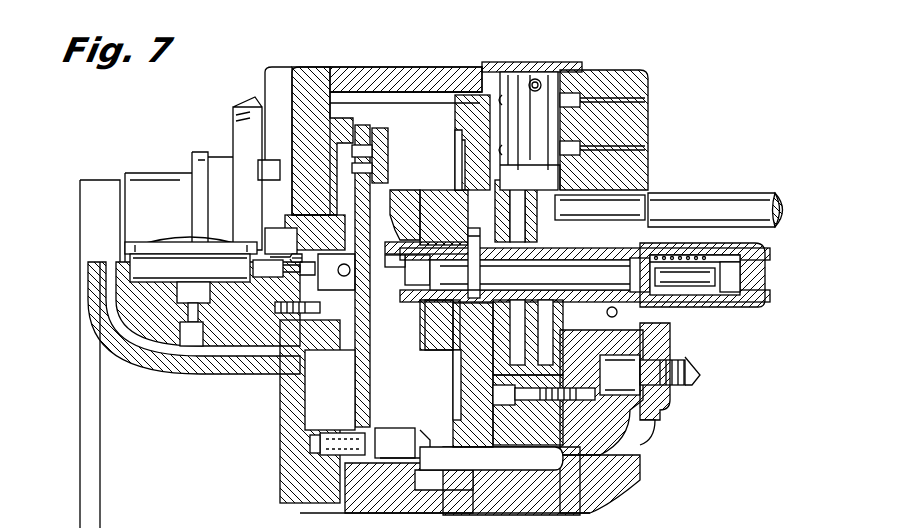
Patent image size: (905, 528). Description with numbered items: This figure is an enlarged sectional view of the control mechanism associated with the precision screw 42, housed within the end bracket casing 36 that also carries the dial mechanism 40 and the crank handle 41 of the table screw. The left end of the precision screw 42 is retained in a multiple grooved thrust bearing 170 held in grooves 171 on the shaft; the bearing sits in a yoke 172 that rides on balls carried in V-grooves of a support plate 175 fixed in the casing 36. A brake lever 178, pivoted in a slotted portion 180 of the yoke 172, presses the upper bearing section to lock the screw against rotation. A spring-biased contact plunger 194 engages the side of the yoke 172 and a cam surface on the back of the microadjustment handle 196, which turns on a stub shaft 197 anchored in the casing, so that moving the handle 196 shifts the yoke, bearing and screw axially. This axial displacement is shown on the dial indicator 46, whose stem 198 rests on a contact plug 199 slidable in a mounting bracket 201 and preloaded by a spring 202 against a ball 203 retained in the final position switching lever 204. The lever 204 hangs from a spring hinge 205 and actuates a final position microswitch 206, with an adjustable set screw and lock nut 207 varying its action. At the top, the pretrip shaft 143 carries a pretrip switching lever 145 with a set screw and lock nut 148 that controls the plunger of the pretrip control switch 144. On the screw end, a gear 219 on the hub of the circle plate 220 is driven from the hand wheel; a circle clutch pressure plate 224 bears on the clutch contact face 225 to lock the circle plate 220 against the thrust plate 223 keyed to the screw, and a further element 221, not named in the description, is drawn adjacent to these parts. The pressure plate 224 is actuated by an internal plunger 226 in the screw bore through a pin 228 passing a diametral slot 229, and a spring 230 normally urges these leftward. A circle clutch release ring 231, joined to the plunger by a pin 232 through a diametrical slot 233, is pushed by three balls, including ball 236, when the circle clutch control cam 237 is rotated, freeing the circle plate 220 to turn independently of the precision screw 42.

The casing 36 is at (578, 485).
The dial mechanism 40 is at (237, 128).
The crank handle 41 is at (92, 434).
The precision screw 42 is at (763, 270).
The dial indicator 46 is at (176, 240).
The pretrip shaft 143 is at (688, 192).
The pretrip control switch 144 is at (522, 62).
The pretrip switching lever 145 is at (568, 80).
The set screw and lock nut 148 is at (538, 72).
The multiple grooved thrust bearing 170 is at (541, 211).
The grooves 171 is at (500, 330).
The yoke 172 is at (544, 410).
The support plate 175 is at (520, 450).
The brake lever 178 is at (480, 175).
The slotted portion 180 is at (500, 186).
The contact plunger 194 is at (620, 375).
The microadjustment handle 196 is at (672, 412).
The stub shaft 197 is at (660, 366).
The stem 198 is at (302, 270).
The contact plug 199 is at (345, 262).
The mounting bracket 201 is at (300, 237).
The spring 202 is at (284, 252).
The ball 203 is at (315, 312).
The final position switching lever 204 is at (366, 368).
The spring hinge 205 is at (385, 152).
The final position microswitch 206 is at (388, 428).
The adjustable set screw and lock nut 207 is at (320, 444).
The gear 219 is at (448, 350).
The circle plate 220 is at (455, 425).
The sleeve 221 is at (400, 238).
The thrust plate 223 is at (398, 212).
The circle clutch pressure plate 224 is at (460, 228).
The clutch contact face 225 is at (458, 332).
The internal plunger 226 is at (422, 265).
The pin 228 is at (543, 271).
The diametral slot 229 is at (502, 263).
The spring 230 is at (735, 292).
The circle clutch release ring 231 is at (680, 310).
The pin 232 is at (660, 248).
The diametrical slot 233 is at (642, 280).
The ball 236 is at (622, 318).
The circle clutch control cam 237 is at (600, 224).